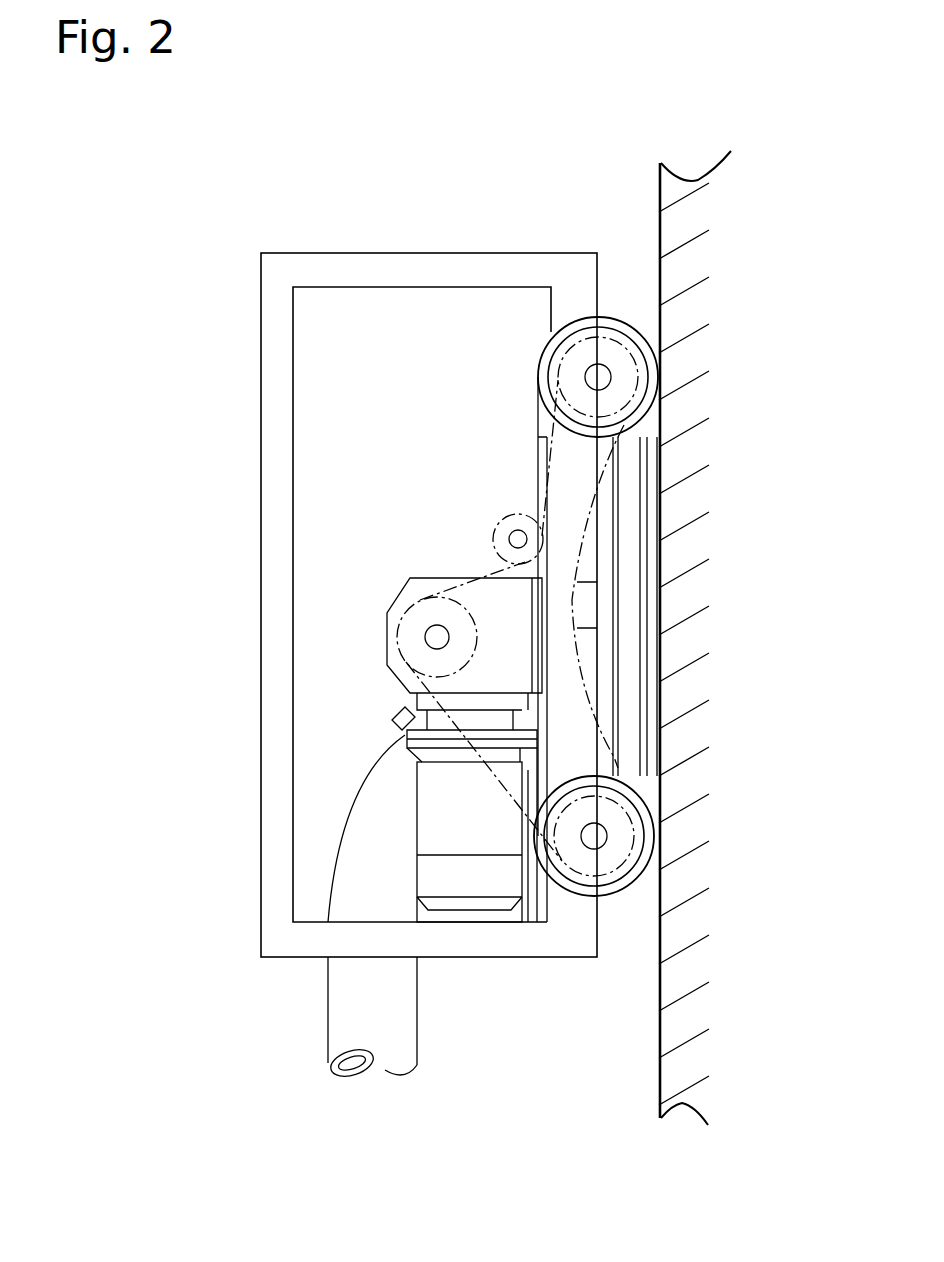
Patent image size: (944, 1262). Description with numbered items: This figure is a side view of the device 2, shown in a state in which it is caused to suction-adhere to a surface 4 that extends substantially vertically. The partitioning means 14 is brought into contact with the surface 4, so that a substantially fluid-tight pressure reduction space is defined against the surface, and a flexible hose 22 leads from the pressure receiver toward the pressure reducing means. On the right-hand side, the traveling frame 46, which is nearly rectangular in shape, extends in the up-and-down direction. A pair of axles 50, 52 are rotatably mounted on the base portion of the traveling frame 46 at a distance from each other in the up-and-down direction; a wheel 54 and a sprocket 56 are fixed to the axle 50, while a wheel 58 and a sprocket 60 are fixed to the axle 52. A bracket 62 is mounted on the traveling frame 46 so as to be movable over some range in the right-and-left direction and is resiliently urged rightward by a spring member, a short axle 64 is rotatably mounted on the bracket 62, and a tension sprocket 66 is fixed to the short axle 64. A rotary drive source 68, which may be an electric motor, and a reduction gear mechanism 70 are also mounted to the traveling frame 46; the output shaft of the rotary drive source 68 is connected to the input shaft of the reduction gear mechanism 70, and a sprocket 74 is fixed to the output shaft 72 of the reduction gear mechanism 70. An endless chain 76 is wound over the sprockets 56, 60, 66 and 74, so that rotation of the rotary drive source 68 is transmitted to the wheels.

The device 2 is at (224, 893).
The surface 4 is at (659, 228).
The partitioning means 14 is at (662, 500).
The flexible hose 22 is at (328, 1005).
The traveling frame 46 is at (520, 958).
The axle 50 is at (612, 377).
The axle 52 is at (607, 836).
The wheel 54 is at (632, 322).
The sprocket 56 is at (630, 890).
The wheel 58 is at (552, 347).
The sprocket 60 is at (560, 807).
The bracket 62 is at (533, 503).
The short axle 64 is at (517, 549).
The tension sprocket 66 is at (498, 525).
The rotary drive source 68 is at (415, 812).
The reduction gear mechanism 70 is at (420, 568).
The output shaft 72 is at (437, 637).
The sprocket 74 is at (455, 563).
The endless chain 76 is at (585, 557).